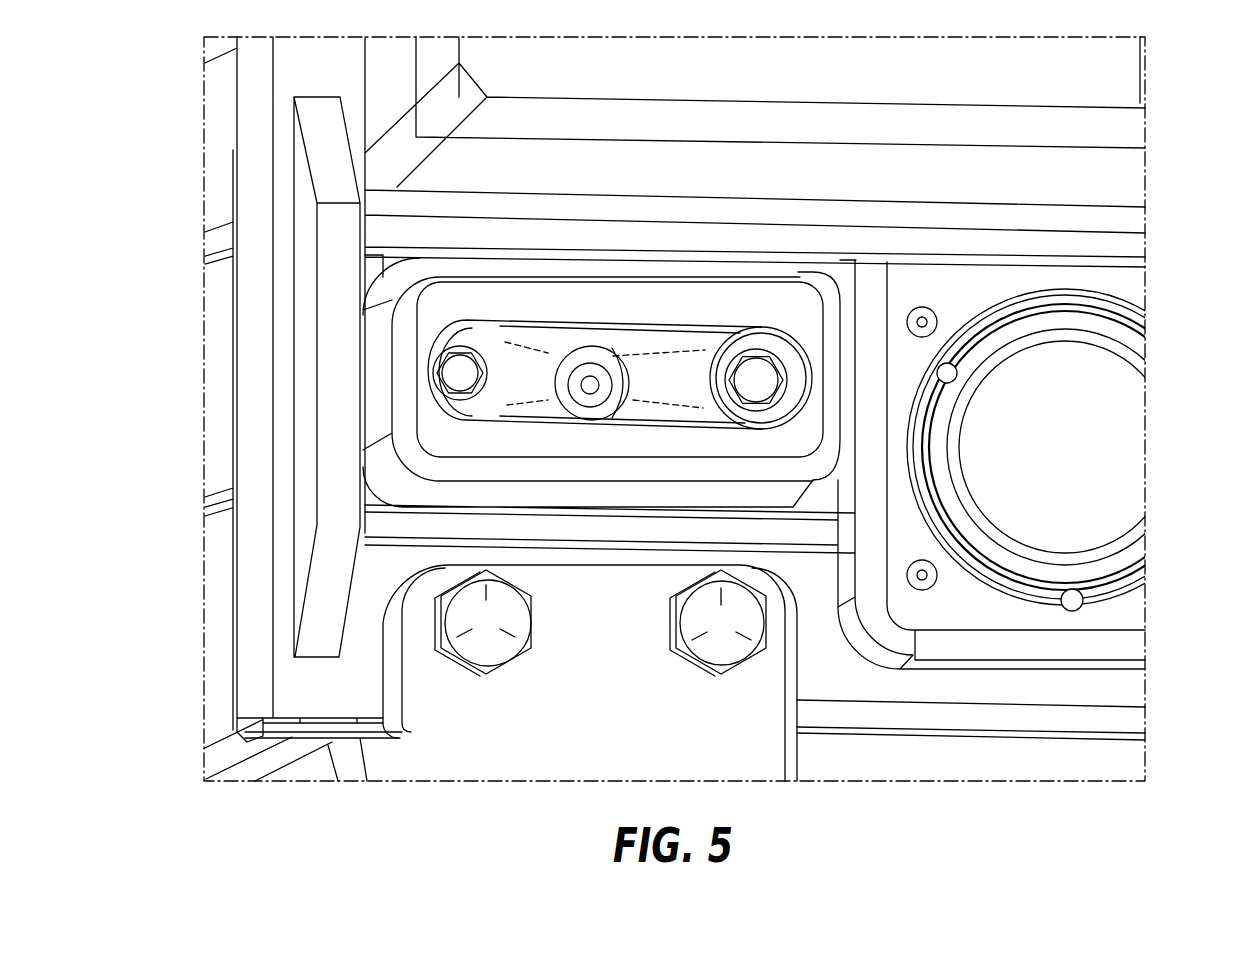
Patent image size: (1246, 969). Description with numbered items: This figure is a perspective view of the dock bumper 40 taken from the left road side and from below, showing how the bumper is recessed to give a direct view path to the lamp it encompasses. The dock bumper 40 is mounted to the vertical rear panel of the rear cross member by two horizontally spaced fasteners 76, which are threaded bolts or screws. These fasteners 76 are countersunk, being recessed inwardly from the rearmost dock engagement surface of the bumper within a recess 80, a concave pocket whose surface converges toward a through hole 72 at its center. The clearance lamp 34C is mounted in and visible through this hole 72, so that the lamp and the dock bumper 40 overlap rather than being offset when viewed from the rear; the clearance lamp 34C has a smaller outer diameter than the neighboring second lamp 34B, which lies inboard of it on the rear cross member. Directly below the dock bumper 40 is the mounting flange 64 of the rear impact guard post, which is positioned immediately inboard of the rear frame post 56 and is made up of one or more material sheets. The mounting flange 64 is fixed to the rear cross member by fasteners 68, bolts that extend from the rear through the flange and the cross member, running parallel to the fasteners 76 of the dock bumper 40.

The second lamp 34B is at (1085, 518).
The clearance lamp 34C is at (583, 372).
The dock bumper 40 is at (800, 307).
The rear frame post 56 is at (250, 692).
The mounting flange 64 is at (607, 637).
The fasteners 68 is at (493, 653).
The hole 72 is at (612, 352).
The fasteners 76 is at (463, 363).
The recess 80 is at (532, 348).